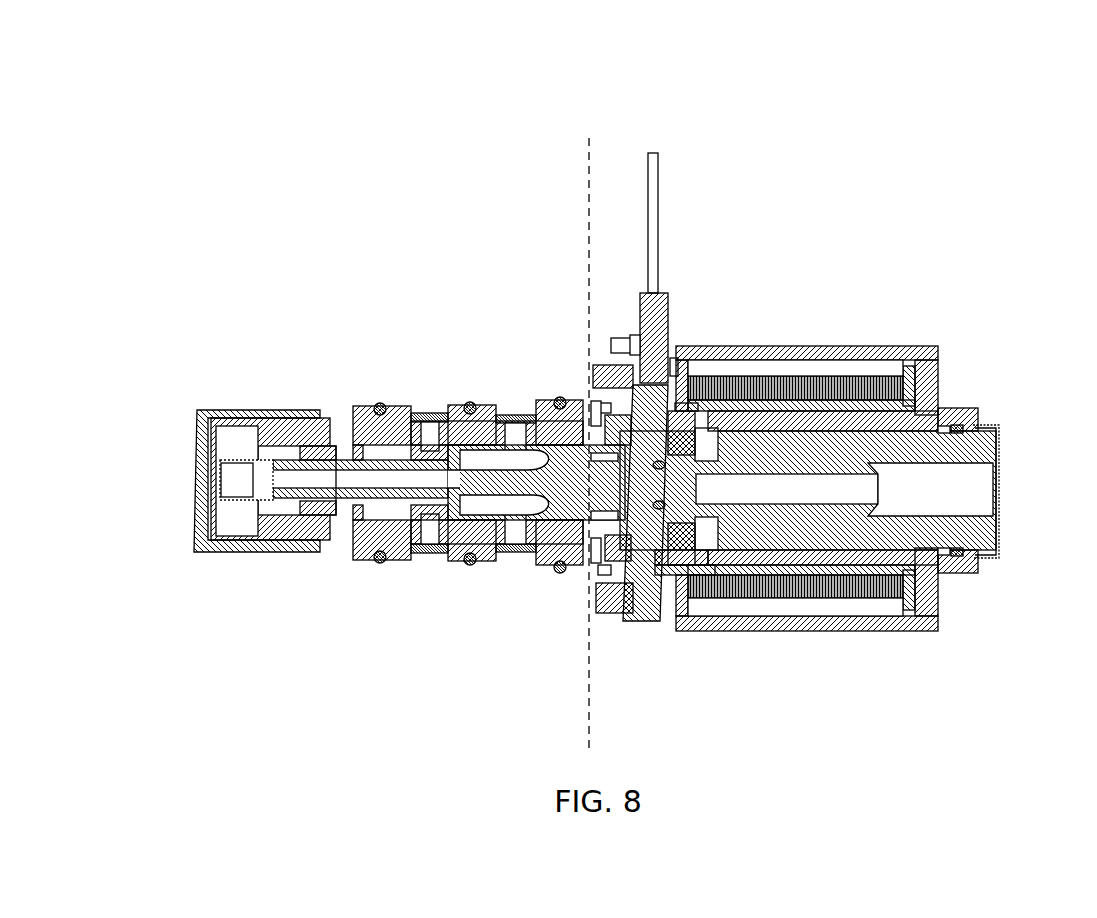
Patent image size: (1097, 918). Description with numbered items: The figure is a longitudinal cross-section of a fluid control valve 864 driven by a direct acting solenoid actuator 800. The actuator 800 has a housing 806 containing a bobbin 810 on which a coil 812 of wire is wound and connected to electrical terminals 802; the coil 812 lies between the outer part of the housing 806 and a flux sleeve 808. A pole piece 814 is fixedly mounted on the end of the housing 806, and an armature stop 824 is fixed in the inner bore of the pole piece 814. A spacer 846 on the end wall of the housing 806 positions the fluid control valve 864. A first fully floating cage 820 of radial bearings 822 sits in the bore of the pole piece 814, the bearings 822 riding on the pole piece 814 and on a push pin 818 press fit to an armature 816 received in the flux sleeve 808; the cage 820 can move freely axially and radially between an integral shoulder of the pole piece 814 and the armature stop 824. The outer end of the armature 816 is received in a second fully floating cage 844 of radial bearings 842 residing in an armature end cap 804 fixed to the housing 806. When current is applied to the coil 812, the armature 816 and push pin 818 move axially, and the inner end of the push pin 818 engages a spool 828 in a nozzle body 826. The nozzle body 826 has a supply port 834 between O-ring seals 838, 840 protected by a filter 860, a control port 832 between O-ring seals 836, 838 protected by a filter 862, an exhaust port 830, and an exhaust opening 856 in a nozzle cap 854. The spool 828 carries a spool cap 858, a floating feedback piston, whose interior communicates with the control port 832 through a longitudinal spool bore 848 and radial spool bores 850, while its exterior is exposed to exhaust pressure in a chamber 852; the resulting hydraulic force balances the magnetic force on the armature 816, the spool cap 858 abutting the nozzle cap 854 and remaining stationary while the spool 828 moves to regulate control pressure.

The direct acting solenoid actuator 800 is at (868, 168).
The electrical terminals 802 is at (652, 198).
The armature end cap 804 is at (980, 408).
The housing 806 is at (818, 336).
The flux sleeve 808 is at (913, 378).
The bobbin 810 is at (628, 287).
The coil 812 is at (859, 592).
The pole piece 814 is at (688, 366).
The armature 816 is at (789, 594).
The push pin 818 is at (759, 396).
The first fully floating cage 820 is at (668, 545).
The radial bearings 822 is at (611, 335).
The armature stop 824 is at (719, 574).
The nozzle body 826 is at (289, 544).
The spool 828 is at (499, 556).
The exhaust port 830 is at (329, 410).
The control port 832 is at (419, 402).
The supply port 834 is at (506, 404).
The O-ring seal 836 is at (371, 395).
The O-ring seal 838 is at (461, 394).
The O-ring seal 840 is at (551, 390).
The radial bearings 842 is at (966, 556).
The second fully floating cage 844 is at (988, 546).
The spacer 846 is at (597, 608).
The longitudinal spool bore 848 is at (334, 515).
The radial spool bores 850 is at (434, 540).
The chamber 852 is at (231, 422).
The nozzle cap 854 is at (194, 505).
The exhaust opening 856 is at (214, 452).
The spool cap 858 is at (183, 417).
The filter 860 is at (514, 557).
The filter 862 is at (419, 555).
The fluid control valve 864 is at (459, 212).